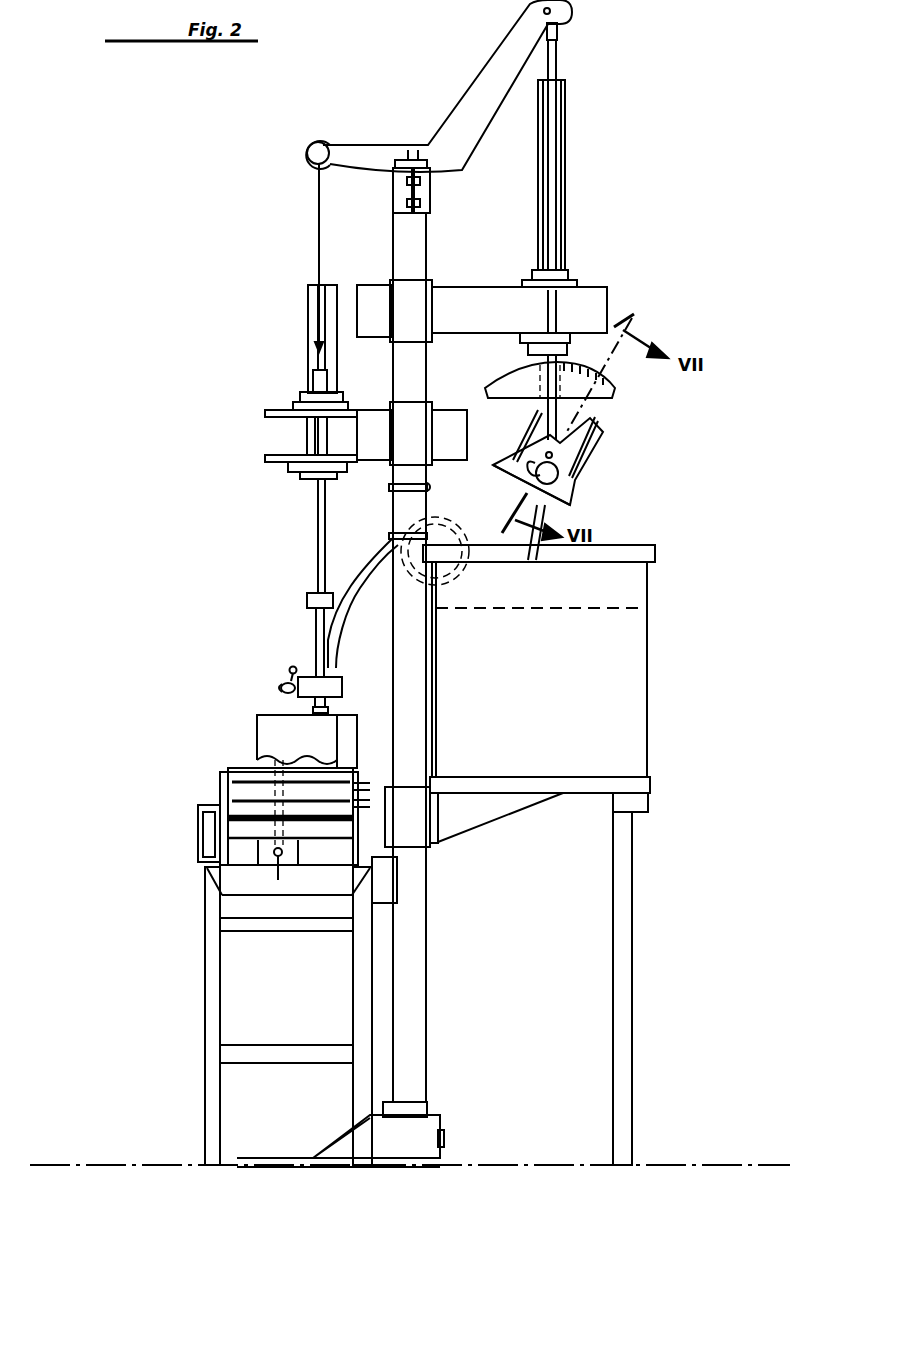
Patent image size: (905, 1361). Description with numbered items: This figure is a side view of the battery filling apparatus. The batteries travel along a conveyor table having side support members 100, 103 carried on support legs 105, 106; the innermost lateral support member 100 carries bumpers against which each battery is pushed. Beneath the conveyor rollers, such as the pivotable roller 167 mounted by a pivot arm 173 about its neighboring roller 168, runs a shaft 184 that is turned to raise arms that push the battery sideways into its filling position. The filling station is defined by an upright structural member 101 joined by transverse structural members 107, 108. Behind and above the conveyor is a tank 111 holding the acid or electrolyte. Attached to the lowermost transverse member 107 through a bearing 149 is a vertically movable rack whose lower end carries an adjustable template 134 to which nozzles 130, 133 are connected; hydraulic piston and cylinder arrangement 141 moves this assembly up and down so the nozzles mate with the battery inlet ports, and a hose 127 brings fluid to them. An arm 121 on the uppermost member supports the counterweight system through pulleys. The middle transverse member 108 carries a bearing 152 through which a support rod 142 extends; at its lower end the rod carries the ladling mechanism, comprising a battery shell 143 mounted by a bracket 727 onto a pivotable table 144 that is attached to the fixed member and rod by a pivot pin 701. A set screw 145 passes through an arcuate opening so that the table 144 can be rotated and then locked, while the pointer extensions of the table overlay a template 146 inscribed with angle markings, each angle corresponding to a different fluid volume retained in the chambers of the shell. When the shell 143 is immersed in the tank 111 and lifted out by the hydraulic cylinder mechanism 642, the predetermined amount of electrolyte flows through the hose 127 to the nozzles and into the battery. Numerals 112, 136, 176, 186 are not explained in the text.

The side support member 100 is at (360, 822).
The upright structural member 101 is at (415, 250).
The side support member 103 is at (218, 840).
The support leg 105 is at (355, 975).
The support leg 106 is at (210, 995).
The transverse structural member 107 is at (372, 425).
The transverse structural member 108 is at (370, 290).
The tank 111 is at (620, 688).
The tank leg 112 is at (620, 912).
The arm 121 is at (490, 80).
The hose 127 is at (370, 560).
The nozzle 130 is at (320, 250).
The nozzle 133 is at (328, 710).
The adjustable template 134 is at (295, 690).
The valve handle 136 is at (283, 668).
The hydraulic piston and cylinder arrangement 141 is at (313, 316).
The support rod 142 is at (552, 148).
The battery shell 143 is at (585, 445).
The pivotable table 144 is at (575, 490).
The set screw 145 is at (540, 475).
The template 146 is at (605, 384).
The bearing 149 is at (305, 395).
The bearing 152 is at (572, 285).
The roller 167 is at (250, 775).
The roller 168 is at (228, 800).
The pivot arm 173 is at (228, 775).
The side fitting 176 is at (198, 826).
The shaft 184 is at (295, 871).
The plunger 186 is at (283, 790).
The hydraulic cylinder mechanism 642 is at (565, 105).
The pivot pin 701 is at (555, 457).
The bracket 727 is at (602, 432).